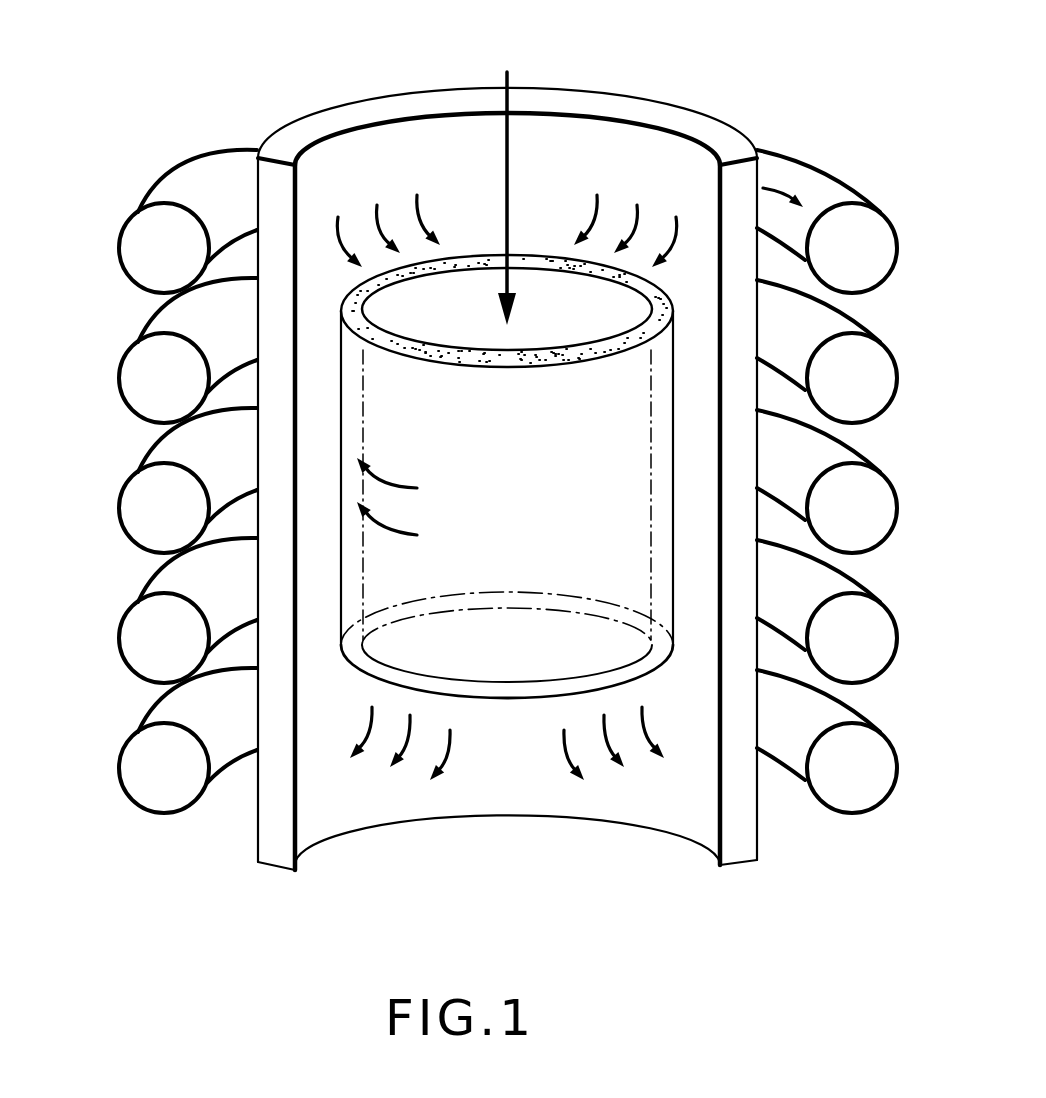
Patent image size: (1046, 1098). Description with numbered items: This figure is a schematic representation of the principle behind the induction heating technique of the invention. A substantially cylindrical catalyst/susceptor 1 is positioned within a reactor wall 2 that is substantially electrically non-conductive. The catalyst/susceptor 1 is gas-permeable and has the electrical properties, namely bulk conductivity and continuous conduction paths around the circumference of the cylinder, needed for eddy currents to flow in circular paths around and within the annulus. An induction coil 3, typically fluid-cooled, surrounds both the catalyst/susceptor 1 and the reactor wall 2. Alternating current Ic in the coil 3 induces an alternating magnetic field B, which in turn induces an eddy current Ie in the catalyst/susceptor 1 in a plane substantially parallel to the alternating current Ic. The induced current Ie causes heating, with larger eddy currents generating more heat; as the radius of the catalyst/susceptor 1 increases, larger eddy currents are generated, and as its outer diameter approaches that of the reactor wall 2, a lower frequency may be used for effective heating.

The catalyst/susceptor 1 is at (527, 548).
The reactor wall 2 is at (722, 867).
The induction coil 3 is at (133, 342).
The alternating magnetic field B is at (506, 396).
The alternating current Ic is at (775, 188).
The eddy current Ie is at (383, 528).